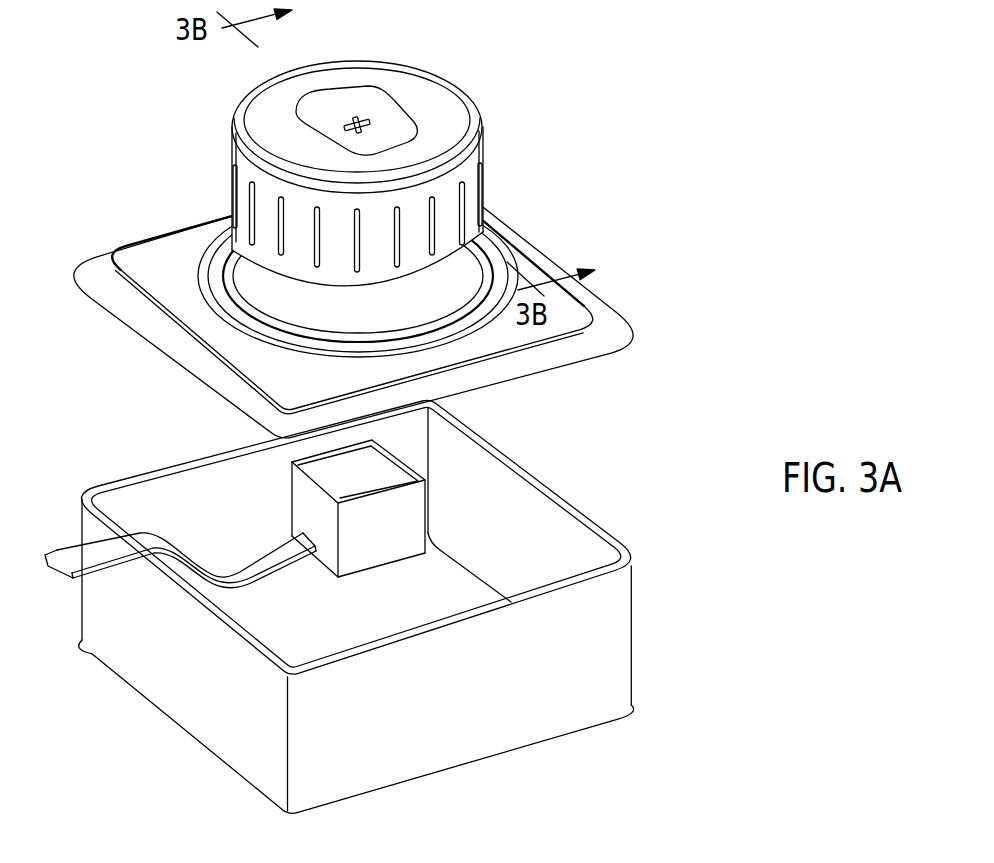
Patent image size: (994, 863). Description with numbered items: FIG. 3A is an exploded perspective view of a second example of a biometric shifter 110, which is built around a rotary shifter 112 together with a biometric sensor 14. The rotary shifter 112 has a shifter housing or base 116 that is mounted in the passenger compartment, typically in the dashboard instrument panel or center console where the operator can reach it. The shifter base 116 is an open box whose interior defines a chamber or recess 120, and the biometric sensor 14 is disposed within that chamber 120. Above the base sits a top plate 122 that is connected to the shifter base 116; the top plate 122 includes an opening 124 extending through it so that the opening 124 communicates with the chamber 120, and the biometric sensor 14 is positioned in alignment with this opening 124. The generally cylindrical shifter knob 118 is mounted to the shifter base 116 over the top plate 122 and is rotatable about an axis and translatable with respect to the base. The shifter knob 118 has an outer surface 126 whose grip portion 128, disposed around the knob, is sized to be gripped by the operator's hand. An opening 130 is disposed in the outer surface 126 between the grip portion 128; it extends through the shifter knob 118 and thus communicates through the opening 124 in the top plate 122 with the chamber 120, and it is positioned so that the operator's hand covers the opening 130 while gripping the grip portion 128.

The biometric shifter 110 is at (605, 92).
The rotary shifter 112 is at (692, 96).
The biometric sensor 14 is at (297, 488).
The shifter base 116 is at (230, 710).
The shifter knob 118 is at (364, 145).
The chamber 120 is at (552, 598).
The top plate 122 is at (100, 272).
The opening 124 is at (353, 341).
The outer surface 126 is at (360, 68).
The grip portion 128 is at (241, 190).
The opening 130 is at (332, 104).